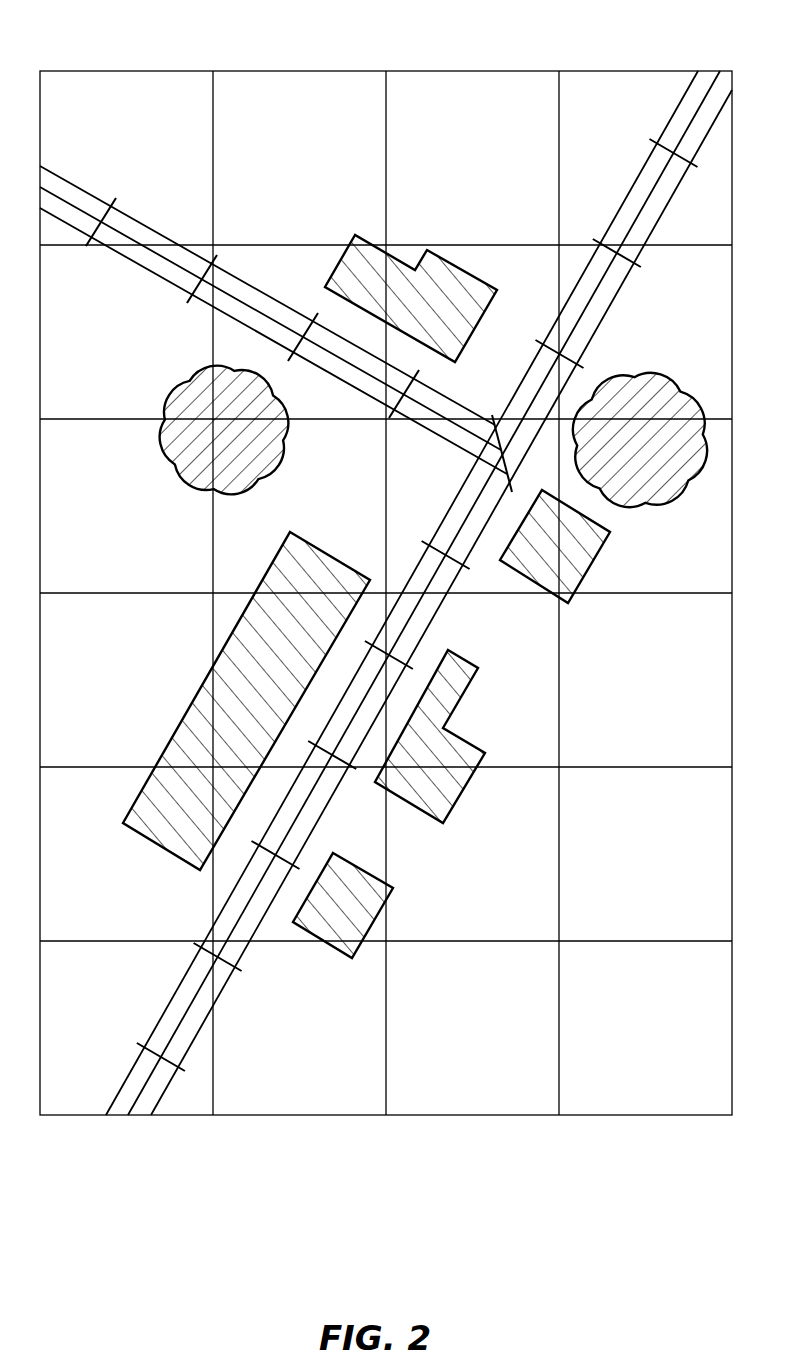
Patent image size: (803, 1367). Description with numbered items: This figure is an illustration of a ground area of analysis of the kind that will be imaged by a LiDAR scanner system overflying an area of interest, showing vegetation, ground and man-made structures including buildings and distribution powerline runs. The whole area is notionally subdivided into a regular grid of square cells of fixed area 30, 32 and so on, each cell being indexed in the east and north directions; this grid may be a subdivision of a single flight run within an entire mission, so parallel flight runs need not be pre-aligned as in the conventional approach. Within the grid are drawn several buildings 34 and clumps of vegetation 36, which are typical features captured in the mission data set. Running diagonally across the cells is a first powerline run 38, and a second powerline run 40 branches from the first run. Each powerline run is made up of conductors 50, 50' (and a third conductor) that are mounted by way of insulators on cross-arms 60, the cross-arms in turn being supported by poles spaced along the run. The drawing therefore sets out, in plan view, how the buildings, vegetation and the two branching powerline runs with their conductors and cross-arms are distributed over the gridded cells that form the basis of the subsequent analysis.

The cell of fixed area 30 is at (472, 93).
The cell of fixed area 32 is at (419, 562).
The building 34 is at (483, 280).
The vegetation 36 is at (180, 460).
The first powerline run 38 is at (440, 487).
The second powerline run 40 is at (171, 206).
The conductor 50 is at (402, 593).
The conductor 50' is at (424, 593).
The cross-arm 60 is at (197, 301).